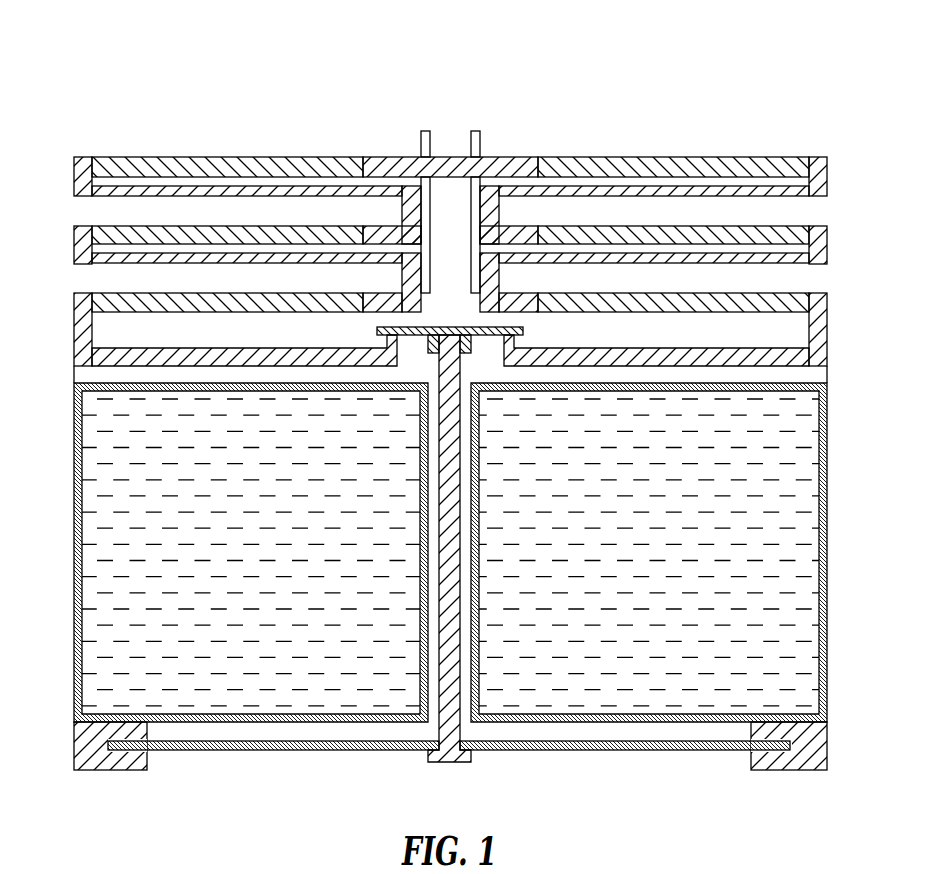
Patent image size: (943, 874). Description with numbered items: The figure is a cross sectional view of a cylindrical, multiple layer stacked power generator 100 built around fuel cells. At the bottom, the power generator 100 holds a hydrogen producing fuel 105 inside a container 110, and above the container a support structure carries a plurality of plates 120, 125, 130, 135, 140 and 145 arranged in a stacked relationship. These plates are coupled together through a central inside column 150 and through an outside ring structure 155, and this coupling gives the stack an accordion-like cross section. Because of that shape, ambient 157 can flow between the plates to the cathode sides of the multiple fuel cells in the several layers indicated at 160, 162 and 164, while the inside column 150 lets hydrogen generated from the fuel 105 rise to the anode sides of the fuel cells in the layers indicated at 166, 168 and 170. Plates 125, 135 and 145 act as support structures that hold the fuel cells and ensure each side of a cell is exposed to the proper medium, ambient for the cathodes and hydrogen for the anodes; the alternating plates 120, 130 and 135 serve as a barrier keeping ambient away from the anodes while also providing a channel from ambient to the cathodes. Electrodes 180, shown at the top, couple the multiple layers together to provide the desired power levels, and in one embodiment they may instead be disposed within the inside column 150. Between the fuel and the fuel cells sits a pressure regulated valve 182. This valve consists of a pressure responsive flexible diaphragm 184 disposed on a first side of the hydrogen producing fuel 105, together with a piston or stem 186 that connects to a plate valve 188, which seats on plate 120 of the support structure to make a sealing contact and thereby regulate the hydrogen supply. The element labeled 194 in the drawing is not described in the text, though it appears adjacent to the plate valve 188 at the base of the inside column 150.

The power generator 100 is at (139, 59).
The hydrogen producing fuel 105 is at (232, 690).
The container 110 is at (74, 528).
The plate 120 is at (698, 348).
The plate 125 is at (88, 293).
The plate 130 is at (814, 265).
The plate 135 is at (88, 226).
The plate 140 is at (814, 199).
The plate 145 is at (88, 157).
The inside column 150 is at (431, 228).
The outside ring structure 155 is at (74, 331).
The ambient 157 is at (757, 278).
The cathode side layer 160 is at (102, 175).
The cathode side layer 162 is at (102, 241).
The cathode side layer 164 is at (102, 308).
The anode side layer 166 is at (625, 313).
The anode side layer 168 is at (622, 265).
The anode side layer 170 is at (622, 198).
The electrodes 180 is at (421, 144).
The pressure regulated valve 182 is at (470, 344).
The pressure responsive flexible diaphragm 184 is at (614, 750).
The piston or stem 186 is at (459, 724).
The plate valve 188 is at (505, 323).
The flange plate 194 is at (383, 337).